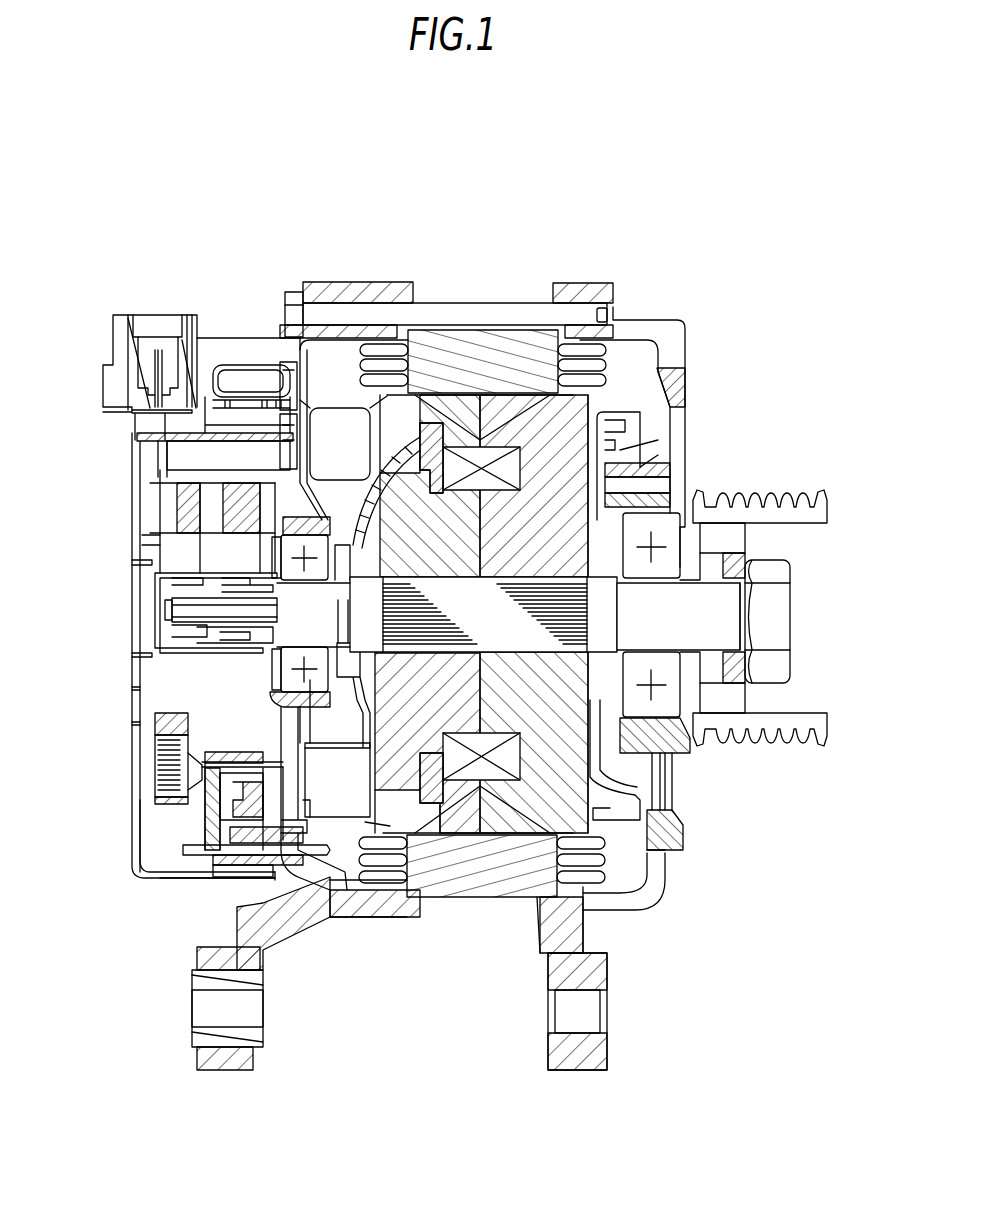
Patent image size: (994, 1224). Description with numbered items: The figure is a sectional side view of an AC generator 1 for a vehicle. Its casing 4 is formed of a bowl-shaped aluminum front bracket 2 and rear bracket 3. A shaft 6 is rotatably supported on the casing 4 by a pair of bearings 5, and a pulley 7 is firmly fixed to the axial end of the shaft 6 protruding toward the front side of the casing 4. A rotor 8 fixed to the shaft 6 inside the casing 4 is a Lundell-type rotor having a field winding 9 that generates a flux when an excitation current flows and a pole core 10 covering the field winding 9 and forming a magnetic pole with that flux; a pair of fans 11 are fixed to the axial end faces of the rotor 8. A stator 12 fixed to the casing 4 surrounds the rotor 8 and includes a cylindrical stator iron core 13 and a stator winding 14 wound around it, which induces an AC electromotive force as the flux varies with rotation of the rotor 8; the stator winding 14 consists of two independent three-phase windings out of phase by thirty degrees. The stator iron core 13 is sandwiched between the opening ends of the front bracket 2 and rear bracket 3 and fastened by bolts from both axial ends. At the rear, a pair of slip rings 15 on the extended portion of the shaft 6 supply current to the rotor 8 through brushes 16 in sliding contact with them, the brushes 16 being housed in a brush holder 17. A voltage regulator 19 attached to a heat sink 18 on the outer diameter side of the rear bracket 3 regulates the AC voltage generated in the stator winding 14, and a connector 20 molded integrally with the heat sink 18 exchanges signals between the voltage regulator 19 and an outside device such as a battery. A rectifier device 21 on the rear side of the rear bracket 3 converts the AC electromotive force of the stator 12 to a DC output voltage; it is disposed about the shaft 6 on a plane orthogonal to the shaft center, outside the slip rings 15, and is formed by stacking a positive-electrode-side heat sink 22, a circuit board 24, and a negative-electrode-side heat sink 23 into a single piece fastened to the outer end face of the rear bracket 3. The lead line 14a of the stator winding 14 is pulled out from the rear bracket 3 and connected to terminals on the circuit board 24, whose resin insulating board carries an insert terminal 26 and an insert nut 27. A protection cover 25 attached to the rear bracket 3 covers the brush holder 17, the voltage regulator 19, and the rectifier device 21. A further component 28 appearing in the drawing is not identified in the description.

The AC generator 1 is at (212, 296).
The front bracket 2 is at (690, 378).
The rear bracket 3 is at (339, 282).
The casing 4 is at (697, 331).
The bearings 5 is at (668, 530).
The shaft 6 is at (722, 620).
The pulley 7 is at (780, 500).
The rotor 8 is at (442, 252).
The field winding 9 is at (471, 460).
The pole core 10 is at (500, 405).
The fans 11 is at (632, 430).
The stator 12 is at (468, 945).
The stator iron core 13 is at (481, 886).
The stator winding 14 is at (570, 884).
The lead line 14a is at (337, 905).
The slip rings 15 is at (247, 586).
The brushes 16 is at (185, 528).
The brush holder 17 is at (156, 542).
The heat sink 18 is at (185, 453).
The voltage regulator 19 is at (190, 429).
The connector 20 is at (112, 322).
The rectifier device 21 is at (70, 792).
The positive-electrode-side heat sink 22 is at (220, 803).
The negative-electrode-side heat sink 23 is at (207, 820).
The circuit board 24 is at (212, 824).
The protection cover 25 is at (127, 703).
The insert terminal 26 is at (137, 655).
The insert nut 27 is at (187, 882).
The capacitor 28 is at (150, 757).